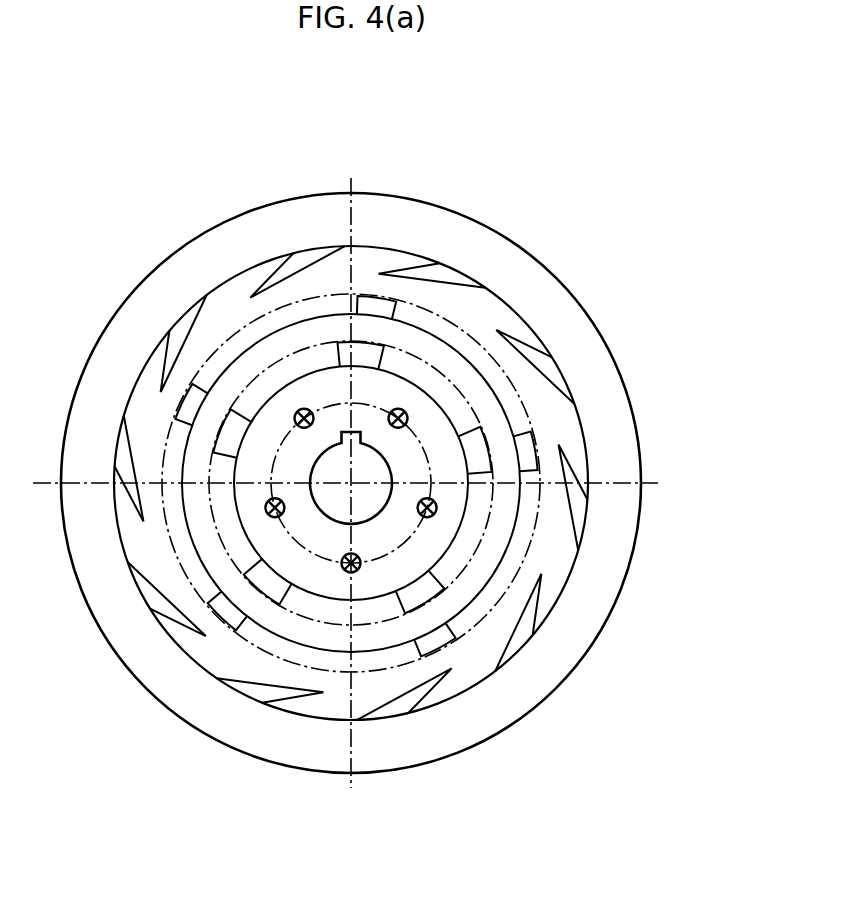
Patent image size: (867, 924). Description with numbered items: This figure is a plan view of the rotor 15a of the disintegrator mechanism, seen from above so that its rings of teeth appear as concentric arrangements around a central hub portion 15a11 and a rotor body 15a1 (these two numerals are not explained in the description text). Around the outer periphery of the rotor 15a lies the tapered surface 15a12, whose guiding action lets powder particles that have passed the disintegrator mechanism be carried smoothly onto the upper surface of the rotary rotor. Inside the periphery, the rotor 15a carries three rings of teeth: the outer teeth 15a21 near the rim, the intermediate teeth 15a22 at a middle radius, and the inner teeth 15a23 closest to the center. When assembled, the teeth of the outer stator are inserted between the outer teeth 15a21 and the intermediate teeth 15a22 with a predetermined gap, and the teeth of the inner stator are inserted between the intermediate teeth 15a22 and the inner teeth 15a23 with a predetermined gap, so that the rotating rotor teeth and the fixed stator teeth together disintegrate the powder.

The rotor 15a is at (418, 193).
The fan body disc 15a1 is at (493, 313).
The hub 15a11 is at (368, 460).
The tapered surface 15a12 is at (618, 524).
The outer teeth 15a21 is at (535, 360).
The intermediate teeth 15a22 is at (528, 442).
The inner teeth 15a23 is at (425, 591).